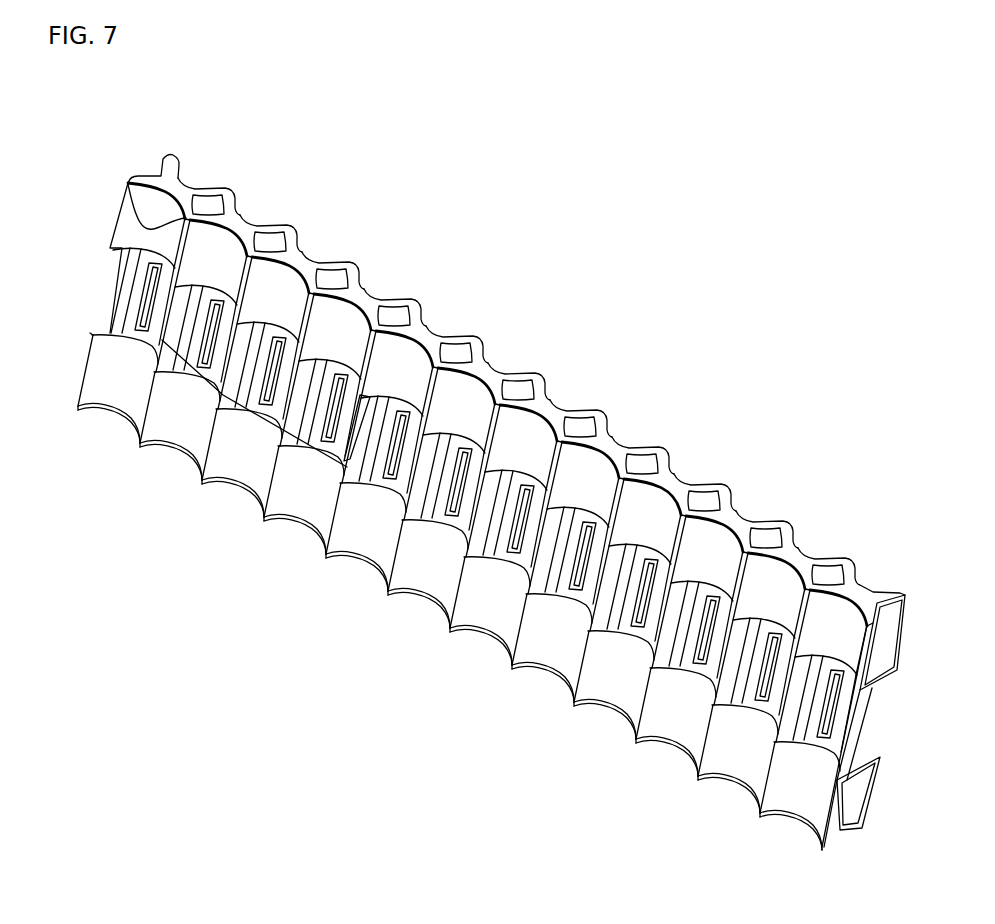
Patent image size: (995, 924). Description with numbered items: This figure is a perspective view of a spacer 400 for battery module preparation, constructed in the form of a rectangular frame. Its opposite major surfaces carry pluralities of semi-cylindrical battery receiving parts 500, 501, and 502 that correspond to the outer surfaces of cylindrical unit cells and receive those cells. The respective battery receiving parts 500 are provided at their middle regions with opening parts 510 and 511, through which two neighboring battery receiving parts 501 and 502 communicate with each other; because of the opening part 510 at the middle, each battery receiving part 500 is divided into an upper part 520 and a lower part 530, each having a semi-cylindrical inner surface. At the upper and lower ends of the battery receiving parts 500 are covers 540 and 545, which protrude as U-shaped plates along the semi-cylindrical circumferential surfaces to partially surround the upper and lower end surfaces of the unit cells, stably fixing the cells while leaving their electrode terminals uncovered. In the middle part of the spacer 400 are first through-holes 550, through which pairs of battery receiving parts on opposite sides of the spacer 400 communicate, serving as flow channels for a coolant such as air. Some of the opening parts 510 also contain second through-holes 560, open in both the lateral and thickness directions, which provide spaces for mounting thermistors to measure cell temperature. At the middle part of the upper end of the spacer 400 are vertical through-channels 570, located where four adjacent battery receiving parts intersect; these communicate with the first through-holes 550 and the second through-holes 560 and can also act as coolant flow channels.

The spacer 400 is at (90, 111).
The battery receiving part 500 is at (240, 436).
The battery receiving part 501 is at (207, 265).
The battery receiving part 502 is at (343, 317).
The opening part 510 is at (200, 455).
The opening part 511 is at (308, 415).
The upper part 520 is at (250, 322).
The lower part 530 is at (262, 447).
The cover 540 is at (558, 442).
The cover 545 is at (515, 632).
The first through-hole 550 is at (300, 312).
The second through-hole 560 is at (365, 445).
The vertical through-channel 570 is at (268, 236).